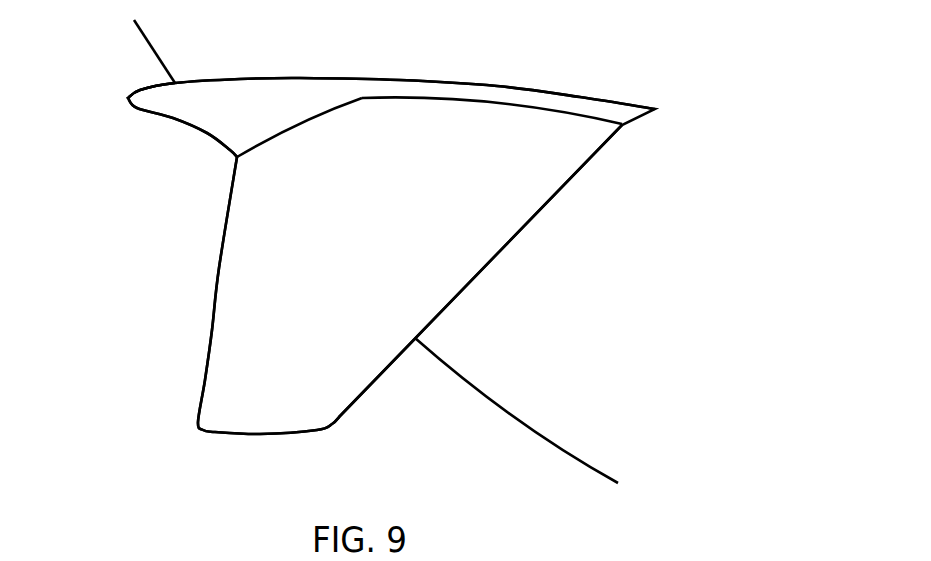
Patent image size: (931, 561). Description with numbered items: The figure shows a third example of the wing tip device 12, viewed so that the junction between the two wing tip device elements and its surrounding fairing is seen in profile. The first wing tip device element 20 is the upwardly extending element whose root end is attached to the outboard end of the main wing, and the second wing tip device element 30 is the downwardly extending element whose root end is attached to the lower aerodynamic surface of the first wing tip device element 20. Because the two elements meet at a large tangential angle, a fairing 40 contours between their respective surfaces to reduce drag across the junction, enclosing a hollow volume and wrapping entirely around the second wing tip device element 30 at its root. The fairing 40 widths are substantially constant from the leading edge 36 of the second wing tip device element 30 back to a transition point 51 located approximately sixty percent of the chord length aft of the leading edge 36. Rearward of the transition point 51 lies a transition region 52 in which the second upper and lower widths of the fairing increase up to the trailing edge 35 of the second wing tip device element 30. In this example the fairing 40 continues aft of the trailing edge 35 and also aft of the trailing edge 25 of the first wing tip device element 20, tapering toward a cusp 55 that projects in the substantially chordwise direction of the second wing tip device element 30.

The wing tip device 12 is at (132, 405).
The first wing tip device element 20 is at (515, 375).
The trailing edge of the first wing tip device element 25 is at (137, 33).
The second wing tip device element 30 is at (267, 405).
The trailing edge of the second wing tip device element 35 is at (218, 268).
The leading edge of the second wing tip device element 36 is at (532, 218).
The fairing 40 is at (278, 90).
The transition point 51 is at (365, 100).
The transition region 52 is at (287, 128).
The cusp 55 is at (123, 100).